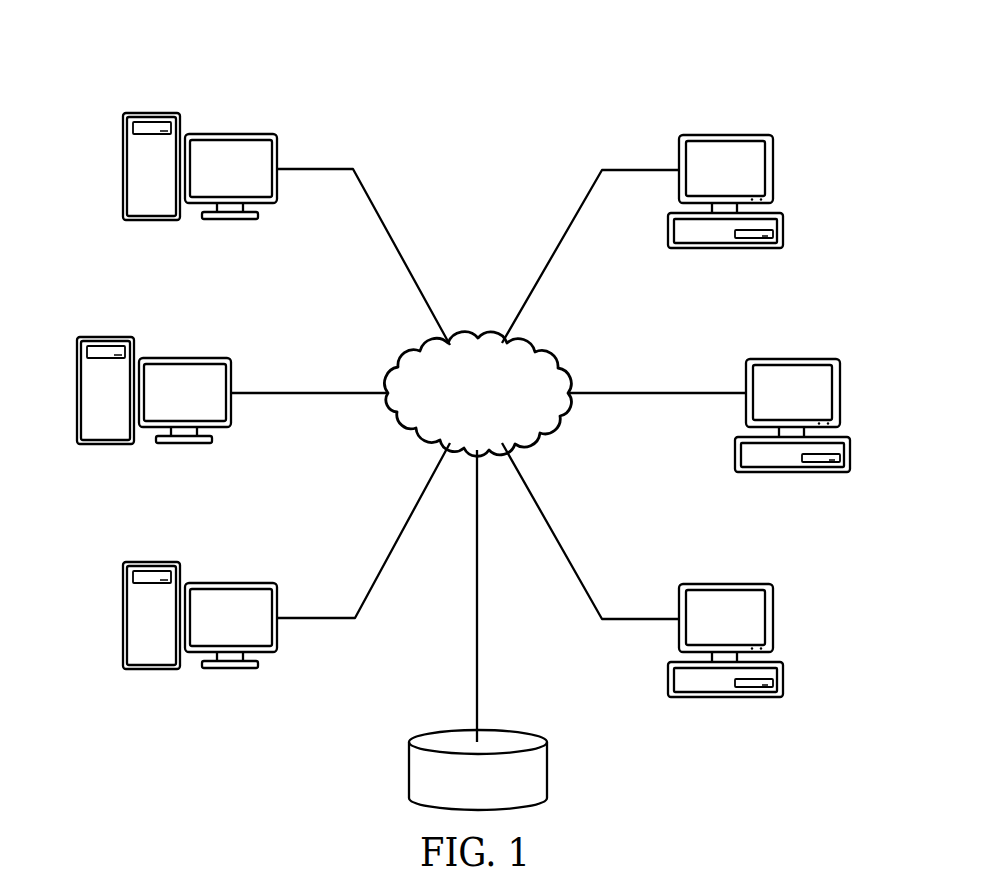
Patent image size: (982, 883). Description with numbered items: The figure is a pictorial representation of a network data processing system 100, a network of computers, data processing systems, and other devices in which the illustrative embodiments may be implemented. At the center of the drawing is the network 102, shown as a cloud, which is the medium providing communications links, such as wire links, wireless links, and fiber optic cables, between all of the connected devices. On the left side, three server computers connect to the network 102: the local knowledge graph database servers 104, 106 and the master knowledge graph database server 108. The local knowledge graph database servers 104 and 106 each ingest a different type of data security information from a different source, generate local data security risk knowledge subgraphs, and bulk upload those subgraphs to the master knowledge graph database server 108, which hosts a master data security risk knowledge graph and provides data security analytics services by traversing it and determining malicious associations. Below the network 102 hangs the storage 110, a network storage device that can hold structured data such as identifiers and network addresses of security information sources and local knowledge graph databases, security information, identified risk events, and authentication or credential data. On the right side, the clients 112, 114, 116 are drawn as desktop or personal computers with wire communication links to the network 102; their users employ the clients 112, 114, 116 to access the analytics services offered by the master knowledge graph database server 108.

The network data processing system 100 is at (396, 84).
The network 102 is at (403, 362).
The local knowledge graph database server 104 is at (122, 165).
The local knowledge graph database server 106 is at (77, 392).
The master knowledge graph database server 108 is at (122, 617).
The storage 110 is at (409, 767).
The client 112 is at (783, 230).
The client 114 is at (849, 456).
The client 116 is at (783, 680).